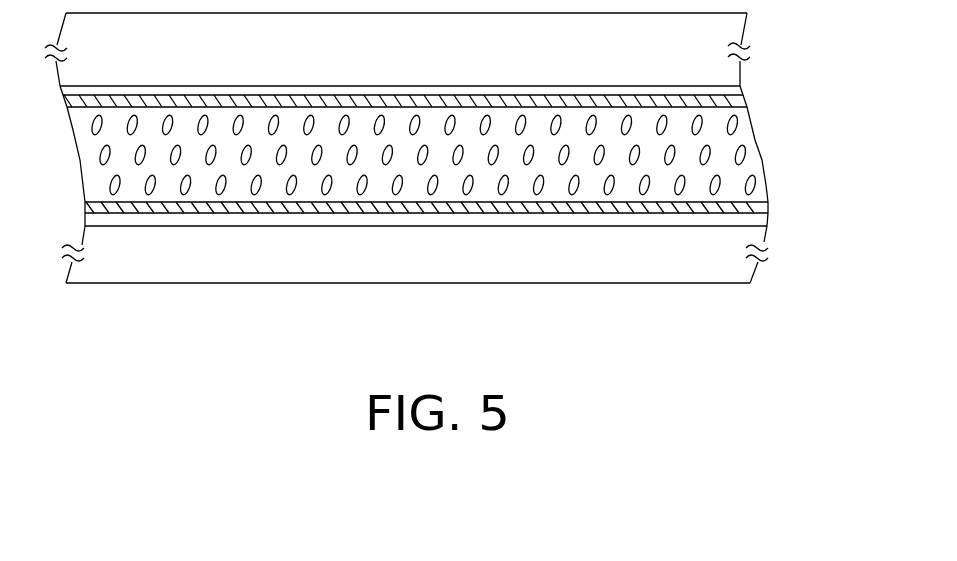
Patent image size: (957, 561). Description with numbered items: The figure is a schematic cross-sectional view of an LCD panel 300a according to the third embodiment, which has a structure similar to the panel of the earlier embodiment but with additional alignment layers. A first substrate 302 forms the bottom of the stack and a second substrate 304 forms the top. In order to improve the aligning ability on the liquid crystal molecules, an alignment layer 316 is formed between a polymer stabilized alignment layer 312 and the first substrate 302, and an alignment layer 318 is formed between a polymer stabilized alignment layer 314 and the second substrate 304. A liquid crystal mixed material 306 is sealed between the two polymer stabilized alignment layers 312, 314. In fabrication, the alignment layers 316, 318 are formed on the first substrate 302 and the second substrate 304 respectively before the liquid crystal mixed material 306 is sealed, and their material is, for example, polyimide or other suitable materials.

The LCD panel 300a is at (805, 365).
The first substrate 302 is at (730, 267).
The second substrate 304 is at (712, 30).
The liquid crystal mixed material 306 is at (717, 140).
The polymer stabilized alignment layer 312 is at (757, 211).
The polymer stabilized alignment layer 314 is at (732, 100).
The alignment layer 316 is at (757, 220).
The alignment layer 318 is at (728, 90).